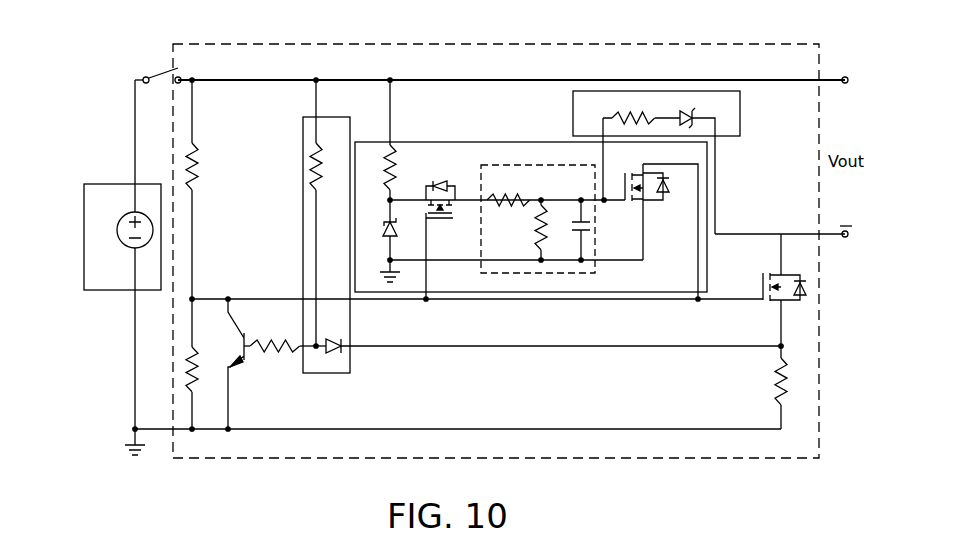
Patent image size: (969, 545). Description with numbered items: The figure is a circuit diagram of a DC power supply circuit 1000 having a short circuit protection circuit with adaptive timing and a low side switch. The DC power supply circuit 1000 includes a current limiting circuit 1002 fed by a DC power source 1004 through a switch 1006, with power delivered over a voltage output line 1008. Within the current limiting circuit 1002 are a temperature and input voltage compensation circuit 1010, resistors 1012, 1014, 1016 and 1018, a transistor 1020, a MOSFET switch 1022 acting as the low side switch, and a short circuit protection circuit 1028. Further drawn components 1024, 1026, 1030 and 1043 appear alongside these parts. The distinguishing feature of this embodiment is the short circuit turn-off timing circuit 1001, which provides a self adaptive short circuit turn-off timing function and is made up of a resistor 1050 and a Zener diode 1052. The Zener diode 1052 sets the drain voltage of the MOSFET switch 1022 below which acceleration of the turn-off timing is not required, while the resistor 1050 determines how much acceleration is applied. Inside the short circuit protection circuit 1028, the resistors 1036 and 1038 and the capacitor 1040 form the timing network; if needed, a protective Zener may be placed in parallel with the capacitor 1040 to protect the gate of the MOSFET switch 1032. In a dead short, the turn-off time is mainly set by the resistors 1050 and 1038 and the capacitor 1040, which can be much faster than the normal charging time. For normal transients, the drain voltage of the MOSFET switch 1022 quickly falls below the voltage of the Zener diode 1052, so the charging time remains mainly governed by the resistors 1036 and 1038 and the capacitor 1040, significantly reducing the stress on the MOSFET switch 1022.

The DC power supply circuit 1000 is at (104, 106).
The short circuit turn-off timing circuit 1001 is at (582, 91).
The current limiting circuit 1002 is at (819, 418).
The DC power source 1004 is at (100, 184).
The switch 1006 is at (162, 72).
The voltage output line 1008 is at (500, 80).
The temperature and input voltage compensation circuit 1010 is at (303, 128).
The resistor 1012 is at (200, 154).
The resistor 1014 is at (183, 375).
The resistor 1016 is at (273, 352).
The resistor 1018 is at (790, 368).
The transistor 1020 is at (235, 334).
The N-FET MOSFET switch 1022 is at (805, 288).
The resistor R3 1024 is at (310, 178).
The diodes Z1 and D1 1026 is at (380, 228).
The short circuit protection circuit 1028 is at (405, 142).
The P-FET transistor Q2 1030 is at (447, 178).
The MOSFET switch 1032 is at (674, 173).
The resistor 1036 is at (520, 184).
The resistor 1038 is at (541, 250).
The capacitor 1040 is at (586, 236).
The resistor R4 1043 is at (388, 148).
The resistor 1050 is at (642, 112).
The Zener diode 1052 is at (686, 108).